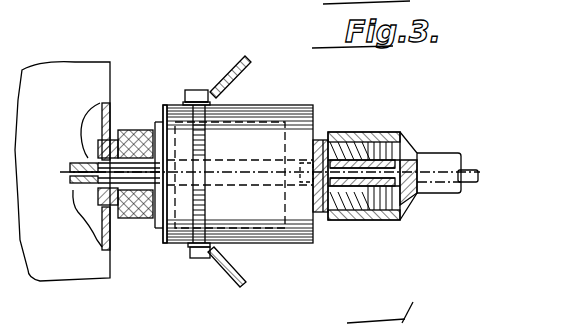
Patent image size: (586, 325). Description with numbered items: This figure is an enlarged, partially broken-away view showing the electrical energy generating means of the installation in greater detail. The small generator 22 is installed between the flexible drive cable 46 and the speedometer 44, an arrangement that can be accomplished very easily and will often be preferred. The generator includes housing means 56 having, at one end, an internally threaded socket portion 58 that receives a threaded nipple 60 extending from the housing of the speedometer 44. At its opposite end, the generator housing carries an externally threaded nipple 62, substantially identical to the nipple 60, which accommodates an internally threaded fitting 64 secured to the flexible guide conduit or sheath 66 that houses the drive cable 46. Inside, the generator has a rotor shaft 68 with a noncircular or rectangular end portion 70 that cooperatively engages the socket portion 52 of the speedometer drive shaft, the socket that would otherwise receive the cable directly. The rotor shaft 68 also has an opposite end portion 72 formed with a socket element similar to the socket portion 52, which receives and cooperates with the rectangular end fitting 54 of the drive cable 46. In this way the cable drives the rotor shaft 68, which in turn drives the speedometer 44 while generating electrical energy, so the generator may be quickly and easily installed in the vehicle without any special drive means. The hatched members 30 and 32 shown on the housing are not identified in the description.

The housing 22 is at (302, 100).
The set screw 30 is at (246, 56).
The set screw 32 is at (242, 284).
The wall 44 is at (112, 75).
The pin 46 is at (472, 183).
The shaft 52 is at (77, 195).
The shaft section 54 is at (382, 220).
The end plate 56 is at (170, 244).
The bushing 58 is at (135, 130).
The bushing 60 is at (135, 220).
The gear housing 62 is at (342, 221).
The nut 64 is at (355, 132).
The sleeve 66 is at (453, 155).
The worm 68 is at (238, 165).
The opening 70 is at (82, 158).
The gear 72 is at (348, 120).